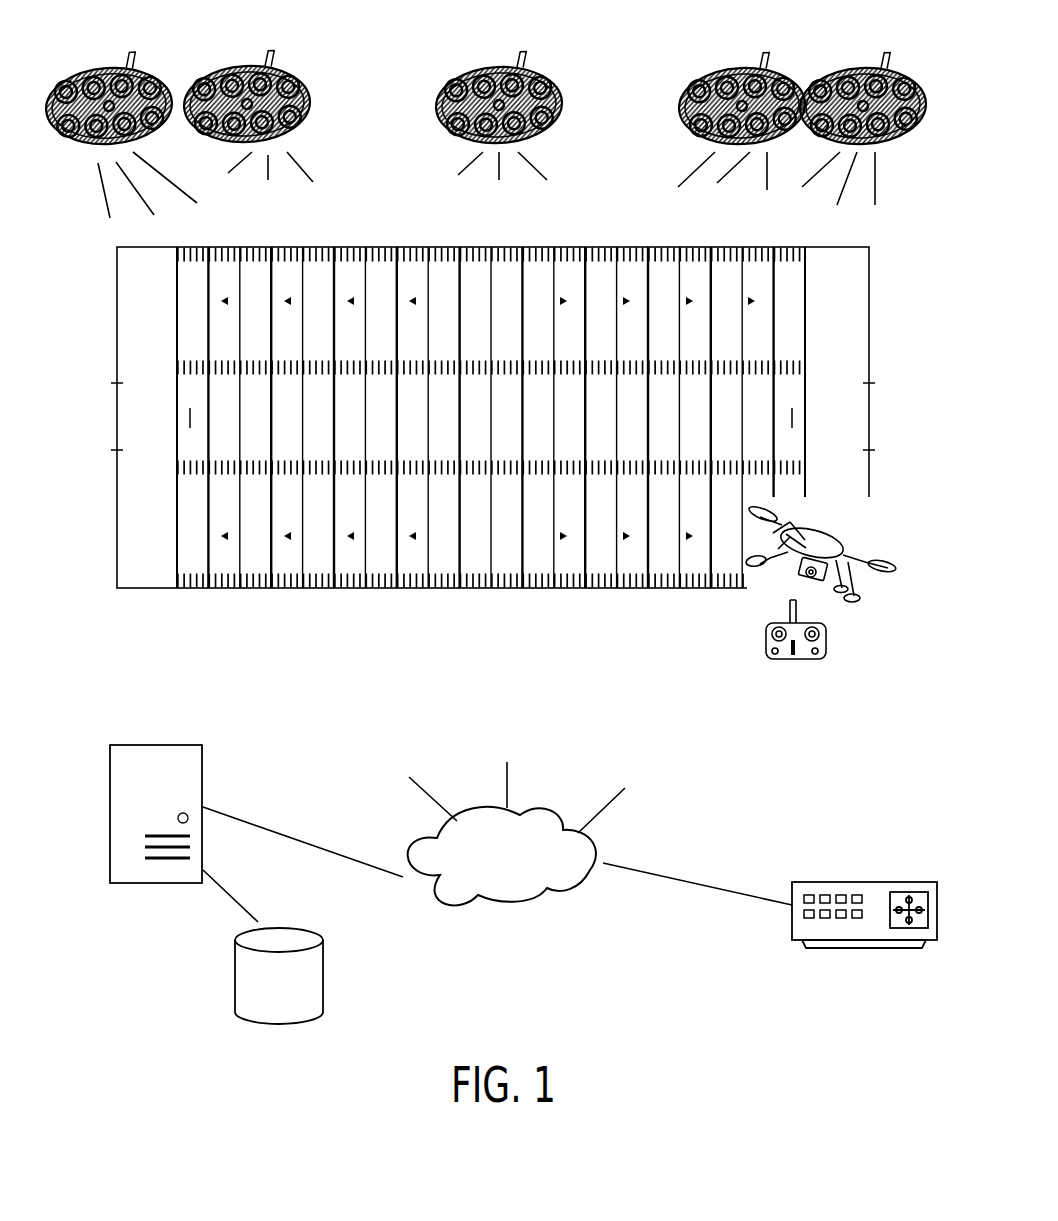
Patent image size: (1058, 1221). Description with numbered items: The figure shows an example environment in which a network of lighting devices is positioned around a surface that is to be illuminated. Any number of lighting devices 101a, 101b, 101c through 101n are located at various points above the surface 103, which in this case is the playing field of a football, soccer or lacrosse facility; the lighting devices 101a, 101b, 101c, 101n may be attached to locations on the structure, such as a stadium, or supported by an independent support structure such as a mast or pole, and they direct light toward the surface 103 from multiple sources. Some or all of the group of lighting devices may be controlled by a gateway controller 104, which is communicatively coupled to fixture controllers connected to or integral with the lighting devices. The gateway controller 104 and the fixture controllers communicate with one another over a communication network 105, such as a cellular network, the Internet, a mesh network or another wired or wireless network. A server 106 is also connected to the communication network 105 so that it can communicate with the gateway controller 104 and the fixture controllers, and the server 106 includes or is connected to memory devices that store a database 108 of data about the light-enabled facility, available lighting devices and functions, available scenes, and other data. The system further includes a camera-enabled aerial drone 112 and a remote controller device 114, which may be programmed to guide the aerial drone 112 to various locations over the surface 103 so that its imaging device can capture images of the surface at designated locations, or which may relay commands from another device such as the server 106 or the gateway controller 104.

The lighting device 101a is at (108, 68).
The lighting device 101b is at (230, 67).
The lighting device 101c is at (490, 68).
The lighting device 101n is at (865, 68).
The surface 103 is at (793, 292).
The camera-enabled aerial drone 112 is at (895, 572).
The remote controller device 114 is at (826, 637).
The server 106 is at (168, 745).
The database 108 is at (280, 927).
The communication network 105 is at (527, 808).
The gateway controller 104 is at (862, 882).